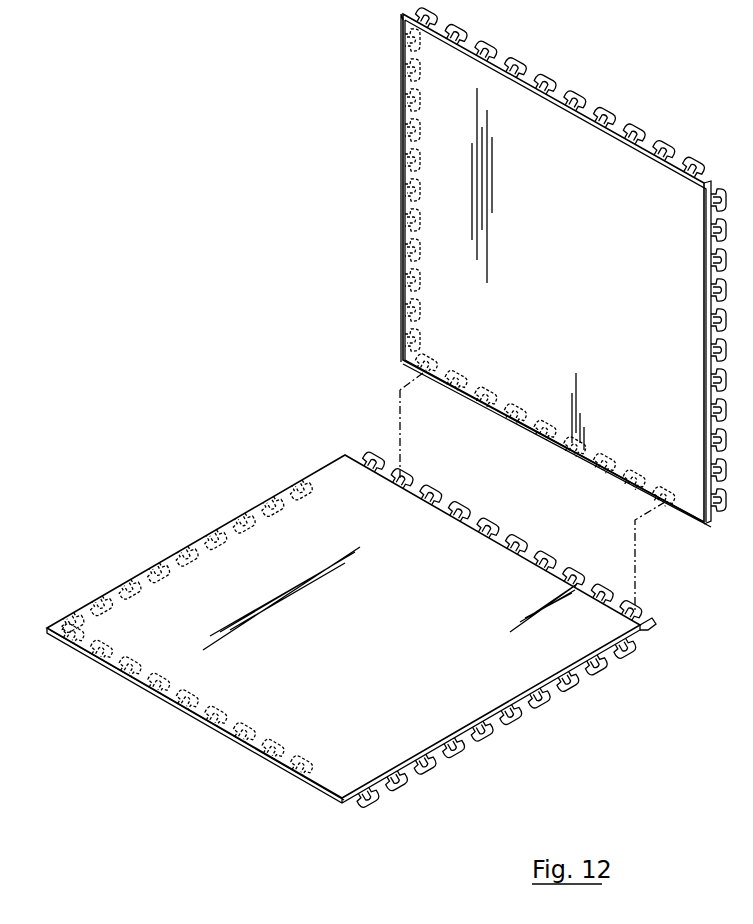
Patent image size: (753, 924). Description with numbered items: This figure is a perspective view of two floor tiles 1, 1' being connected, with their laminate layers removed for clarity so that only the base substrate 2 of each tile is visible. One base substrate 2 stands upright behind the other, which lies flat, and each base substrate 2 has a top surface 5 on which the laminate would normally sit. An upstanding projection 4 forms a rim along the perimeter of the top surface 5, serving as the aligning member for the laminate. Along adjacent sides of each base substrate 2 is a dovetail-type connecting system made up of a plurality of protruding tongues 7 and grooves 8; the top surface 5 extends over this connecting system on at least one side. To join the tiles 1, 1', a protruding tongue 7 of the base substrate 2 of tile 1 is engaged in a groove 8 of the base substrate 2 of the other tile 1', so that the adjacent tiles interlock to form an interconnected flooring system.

The tile 1 is at (496, 270).
The another tile 1' is at (351, 623).
The base substrate 2 is at (451, 147).
The upstanding projection 4 is at (483, 532).
The top surface 5 is at (545, 284).
The protruding tongue 7 is at (440, 376).
The groove 8 is at (547, 428).